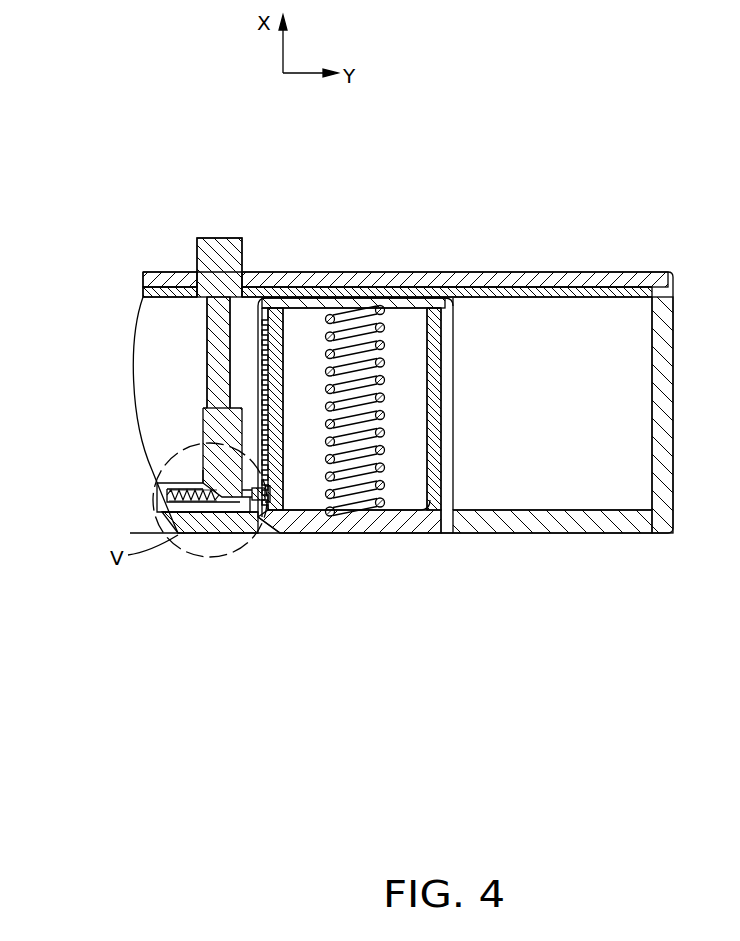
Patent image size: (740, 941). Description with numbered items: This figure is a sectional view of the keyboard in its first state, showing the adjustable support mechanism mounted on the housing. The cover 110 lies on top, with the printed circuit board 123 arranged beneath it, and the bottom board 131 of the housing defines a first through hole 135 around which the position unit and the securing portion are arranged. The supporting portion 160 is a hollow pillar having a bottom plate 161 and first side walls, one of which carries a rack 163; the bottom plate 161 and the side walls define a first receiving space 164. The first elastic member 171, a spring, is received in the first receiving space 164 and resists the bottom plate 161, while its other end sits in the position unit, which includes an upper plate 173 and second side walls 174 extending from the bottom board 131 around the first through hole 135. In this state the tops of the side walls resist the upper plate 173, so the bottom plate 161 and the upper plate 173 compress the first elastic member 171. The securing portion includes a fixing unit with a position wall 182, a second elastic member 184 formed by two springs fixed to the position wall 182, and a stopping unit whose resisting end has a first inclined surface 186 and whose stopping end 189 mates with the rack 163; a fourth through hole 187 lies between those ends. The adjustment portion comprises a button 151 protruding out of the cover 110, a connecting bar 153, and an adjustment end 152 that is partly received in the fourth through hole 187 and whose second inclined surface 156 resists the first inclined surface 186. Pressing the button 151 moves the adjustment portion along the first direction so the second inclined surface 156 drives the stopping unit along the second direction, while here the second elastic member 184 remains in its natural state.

The cover 110 is at (512, 283).
The printed circuit board 123 is at (575, 292).
The bottom board 131 is at (560, 520).
The first through hole 135 is at (440, 528).
The button 151 is at (235, 255).
The adjustment end 152 is at (240, 452).
The connecting bar 153 is at (212, 333).
The second inclined surface 156 is at (205, 472).
The supporting portion 160 is at (433, 322).
The bottom plate 161 is at (318, 520).
The rack 163 is at (268, 402).
The first receiving space 164 is at (398, 505).
The first elastic member 171 is at (355, 315).
The upper plate 173 is at (300, 302).
The second side walls 174 is at (447, 410).
The position wall 182 is at (178, 510).
The second elastic member 184 is at (183, 492).
The first inclined surface 186 is at (200, 505).
The fourth through hole 187 is at (246, 500).
The stopping end 189 is at (258, 505).